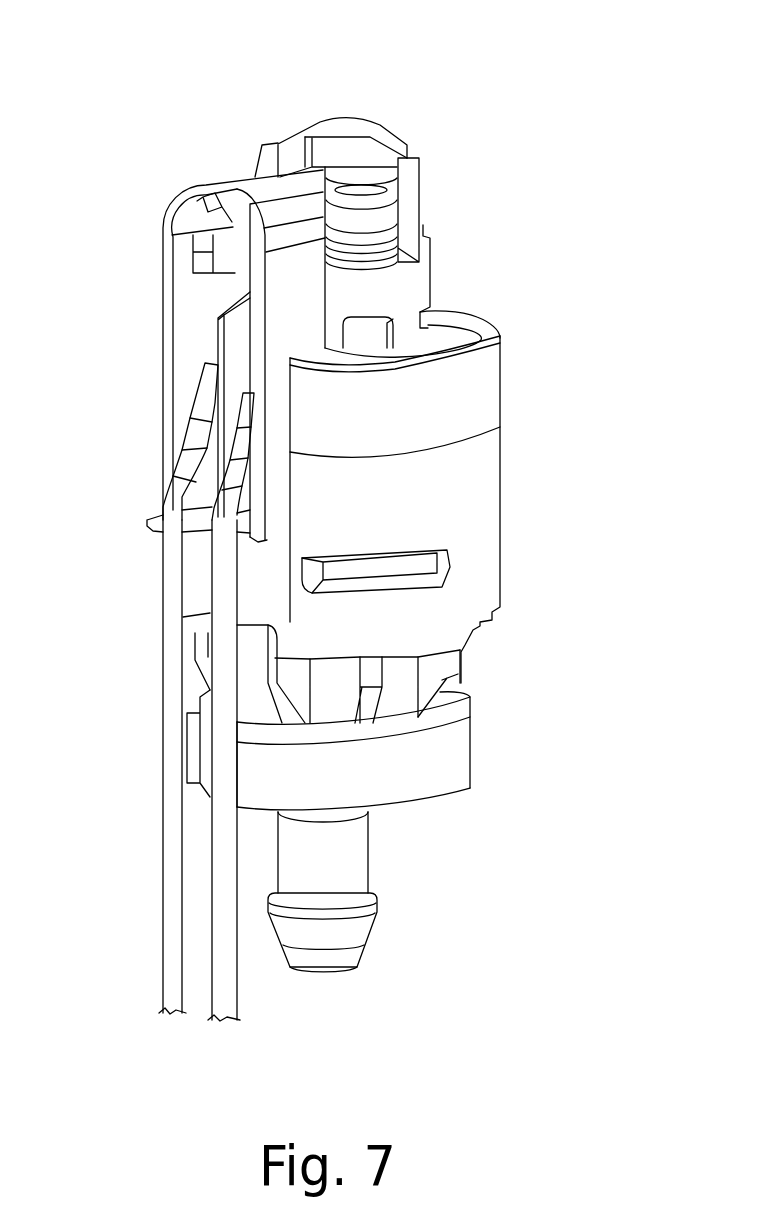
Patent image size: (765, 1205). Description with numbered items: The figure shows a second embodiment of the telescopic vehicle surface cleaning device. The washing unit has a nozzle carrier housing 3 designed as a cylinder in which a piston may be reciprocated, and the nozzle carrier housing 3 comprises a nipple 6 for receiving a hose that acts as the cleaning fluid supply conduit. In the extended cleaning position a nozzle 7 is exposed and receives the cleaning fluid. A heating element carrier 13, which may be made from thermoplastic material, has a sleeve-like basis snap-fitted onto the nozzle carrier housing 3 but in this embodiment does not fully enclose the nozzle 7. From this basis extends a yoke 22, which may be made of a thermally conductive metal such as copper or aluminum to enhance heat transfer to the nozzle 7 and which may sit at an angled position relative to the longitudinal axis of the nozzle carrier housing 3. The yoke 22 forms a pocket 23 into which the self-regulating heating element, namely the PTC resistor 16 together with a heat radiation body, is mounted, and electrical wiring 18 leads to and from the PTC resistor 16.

The nozzle carrier housing 3 is at (443, 677).
The nipple 6 is at (363, 882).
The nozzle 7 is at (380, 128).
The heating element carrier 13 is at (490, 513).
The PTC resistor 16 is at (191, 183).
The electrical wiring 18 is at (220, 977).
The yoke 22 is at (307, 279).
The pocket 23 is at (187, 292).